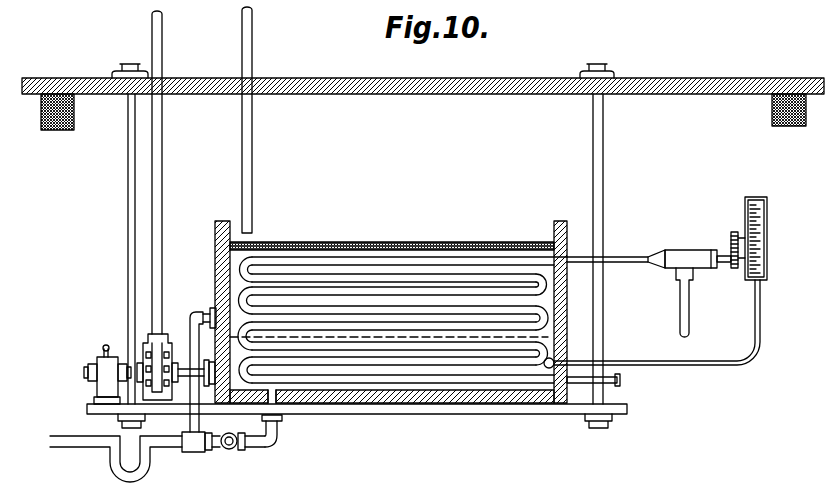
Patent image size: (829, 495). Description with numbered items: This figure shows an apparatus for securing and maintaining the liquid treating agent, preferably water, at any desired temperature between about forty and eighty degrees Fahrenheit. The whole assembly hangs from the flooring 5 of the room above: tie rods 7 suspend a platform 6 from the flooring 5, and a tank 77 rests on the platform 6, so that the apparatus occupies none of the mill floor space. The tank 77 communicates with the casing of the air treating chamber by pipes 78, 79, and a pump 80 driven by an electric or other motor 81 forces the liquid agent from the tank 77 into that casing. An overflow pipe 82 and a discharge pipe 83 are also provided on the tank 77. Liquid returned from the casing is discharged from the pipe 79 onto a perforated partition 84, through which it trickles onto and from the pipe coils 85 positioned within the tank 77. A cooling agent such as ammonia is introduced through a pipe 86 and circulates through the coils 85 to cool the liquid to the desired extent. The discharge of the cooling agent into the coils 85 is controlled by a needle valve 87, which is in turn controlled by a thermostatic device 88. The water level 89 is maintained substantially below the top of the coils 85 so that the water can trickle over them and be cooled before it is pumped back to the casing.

The flooring 5 is at (514, 82).
The platform 6 is at (441, 411).
The tie rods 7 is at (128, 207).
The tank 77 is at (565, 221).
The pipe 78 is at (162, 148).
The pipe 79 is at (252, 148).
The pump 80 is at (171, 345).
The motor 81 is at (98, 366).
The overflow pipe 82 is at (200, 313).
The discharge pipe 83 is at (252, 441).
The perforated partition 84 is at (318, 243).
The pipe coils 85 is at (418, 258).
The pipe 86 is at (682, 313).
The needle valve 87 is at (727, 254).
The thermostatic device 88 is at (767, 224).
The water level 89 is at (549, 337).